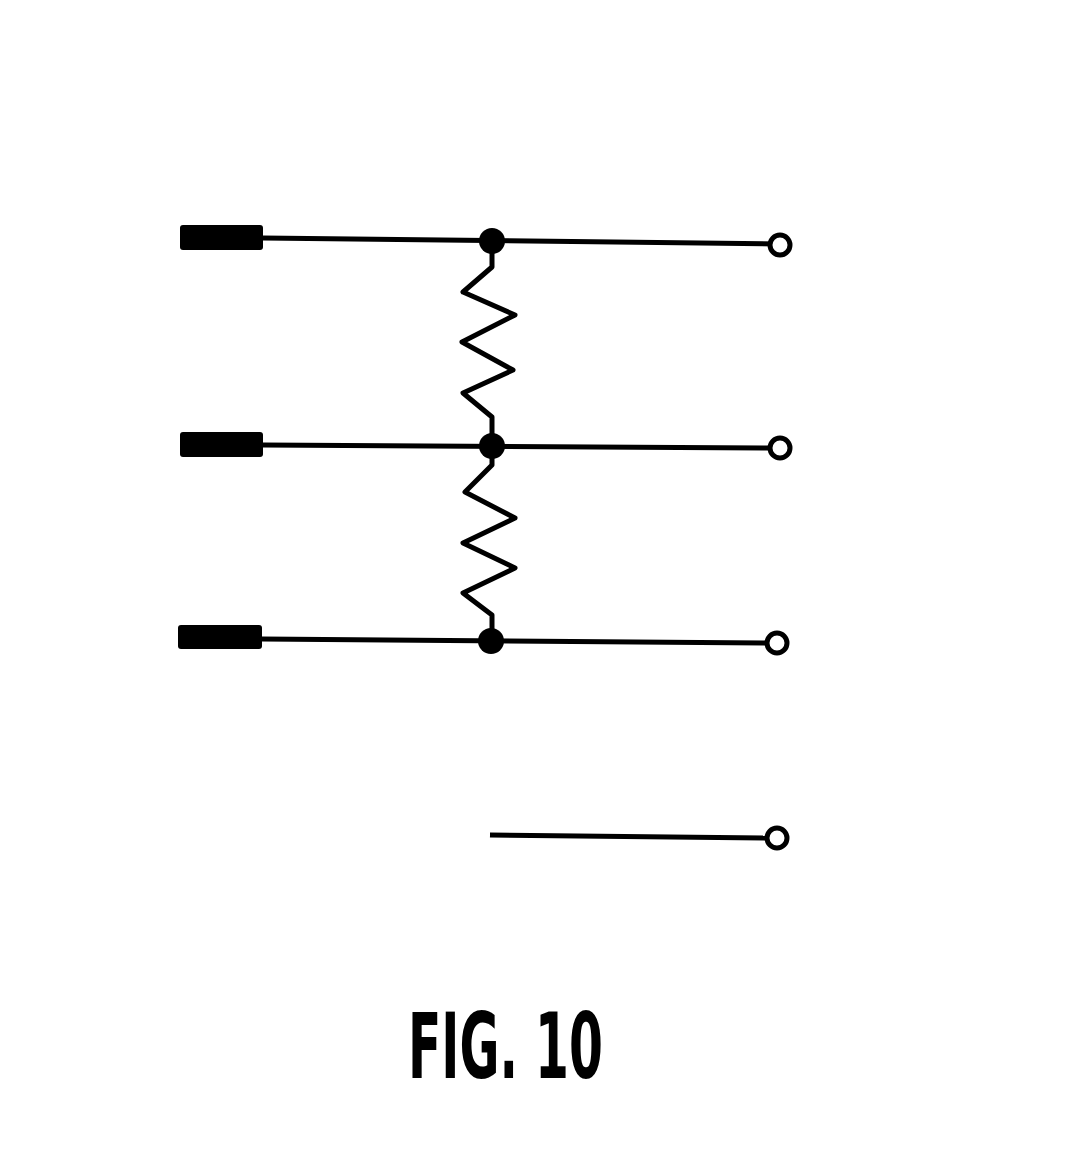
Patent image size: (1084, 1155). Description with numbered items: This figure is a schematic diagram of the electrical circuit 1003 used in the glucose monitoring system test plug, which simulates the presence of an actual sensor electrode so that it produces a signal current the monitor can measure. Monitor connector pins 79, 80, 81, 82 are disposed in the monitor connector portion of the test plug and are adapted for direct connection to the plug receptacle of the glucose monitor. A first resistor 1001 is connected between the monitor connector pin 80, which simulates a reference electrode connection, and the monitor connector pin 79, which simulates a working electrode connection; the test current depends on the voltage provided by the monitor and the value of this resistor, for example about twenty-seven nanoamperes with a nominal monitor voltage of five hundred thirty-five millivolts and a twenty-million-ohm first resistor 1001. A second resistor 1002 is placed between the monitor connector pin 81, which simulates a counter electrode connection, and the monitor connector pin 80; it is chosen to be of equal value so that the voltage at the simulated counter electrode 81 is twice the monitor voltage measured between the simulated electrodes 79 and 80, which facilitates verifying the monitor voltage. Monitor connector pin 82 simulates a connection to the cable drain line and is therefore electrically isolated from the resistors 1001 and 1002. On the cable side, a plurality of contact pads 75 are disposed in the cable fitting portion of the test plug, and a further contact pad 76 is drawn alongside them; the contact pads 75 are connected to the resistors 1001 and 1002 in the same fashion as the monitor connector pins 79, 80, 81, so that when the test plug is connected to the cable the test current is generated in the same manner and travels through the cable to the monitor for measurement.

The electrical circuit 1003 is at (617, 153).
The contact pads 75 is at (180, 237).
The resistive element 76 is at (180, 637).
The second resistor 1002 is at (515, 315).
The first resistor 1001 is at (515, 515).
The monitor connector pin 81 is at (792, 241).
The monitor connector pin 80 is at (791, 441).
The monitor connector pin 79 is at (788, 637).
The monitor connector pin 82 is at (788, 833).